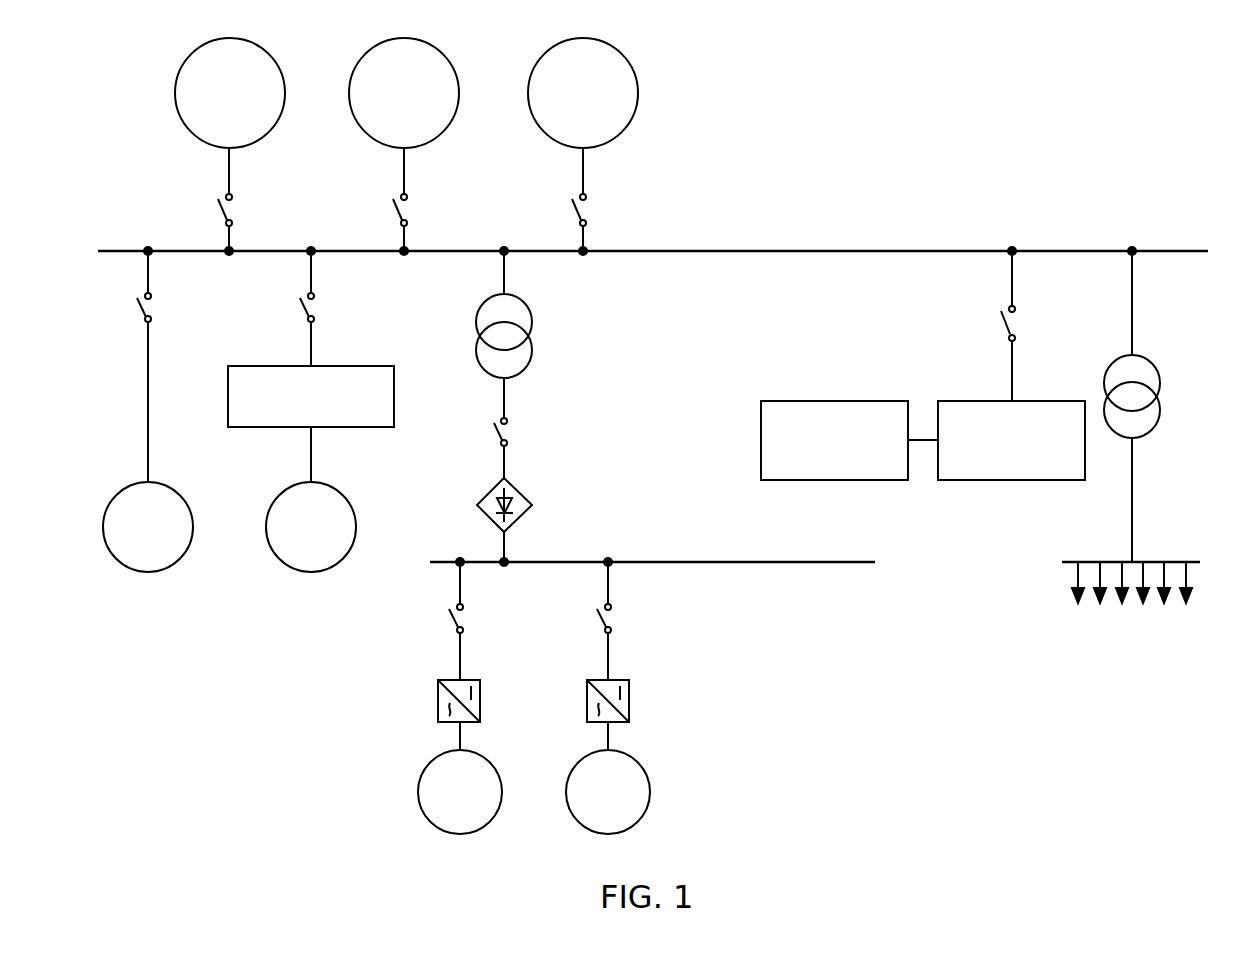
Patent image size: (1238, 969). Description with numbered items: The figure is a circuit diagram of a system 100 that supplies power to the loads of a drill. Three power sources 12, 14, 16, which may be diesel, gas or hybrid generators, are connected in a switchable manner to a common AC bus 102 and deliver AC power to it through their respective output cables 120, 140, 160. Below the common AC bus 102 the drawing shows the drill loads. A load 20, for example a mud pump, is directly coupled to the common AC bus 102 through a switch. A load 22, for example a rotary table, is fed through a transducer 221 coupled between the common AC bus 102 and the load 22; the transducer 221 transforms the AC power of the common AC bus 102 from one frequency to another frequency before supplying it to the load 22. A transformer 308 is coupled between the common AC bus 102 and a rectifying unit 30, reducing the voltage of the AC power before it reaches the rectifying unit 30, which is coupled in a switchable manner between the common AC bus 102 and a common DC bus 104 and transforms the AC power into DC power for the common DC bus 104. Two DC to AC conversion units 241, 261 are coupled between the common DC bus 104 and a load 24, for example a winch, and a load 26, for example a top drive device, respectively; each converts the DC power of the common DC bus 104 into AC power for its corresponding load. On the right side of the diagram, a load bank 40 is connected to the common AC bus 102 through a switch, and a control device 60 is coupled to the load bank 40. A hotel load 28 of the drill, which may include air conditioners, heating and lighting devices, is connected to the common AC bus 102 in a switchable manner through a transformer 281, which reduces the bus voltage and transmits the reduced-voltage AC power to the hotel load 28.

The system 100 is at (1090, 146).
The common AC bus 102 is at (872, 251).
The common DC bus 104 is at (645, 562).
The power source 12 is at (195, 142).
The power source 14 is at (375, 140).
The power source 16 is at (547, 140).
The output cable 120 is at (231, 163).
The output cable 140 is at (406, 163).
The output cable 160 is at (585, 163).
The load 20 is at (187, 551).
The load 22 is at (344, 556).
The transducer 221 is at (352, 366).
The transformer 308 is at (532, 343).
The rectifying unit 30 is at (518, 491).
The DC to AC conversion unit 241 is at (480, 689).
The DC to AC conversion unit 261 is at (629, 689).
The load 24 is at (494, 818).
The load 26 is at (642, 818).
The control device 60 is at (835, 401).
The load bank 40 is at (1035, 401).
The transformer 281 is at (1158, 363).
The hotel load 28 is at (1157, 562).